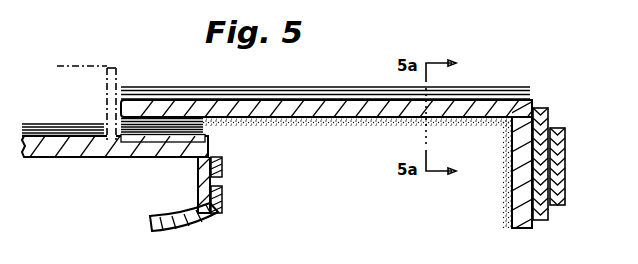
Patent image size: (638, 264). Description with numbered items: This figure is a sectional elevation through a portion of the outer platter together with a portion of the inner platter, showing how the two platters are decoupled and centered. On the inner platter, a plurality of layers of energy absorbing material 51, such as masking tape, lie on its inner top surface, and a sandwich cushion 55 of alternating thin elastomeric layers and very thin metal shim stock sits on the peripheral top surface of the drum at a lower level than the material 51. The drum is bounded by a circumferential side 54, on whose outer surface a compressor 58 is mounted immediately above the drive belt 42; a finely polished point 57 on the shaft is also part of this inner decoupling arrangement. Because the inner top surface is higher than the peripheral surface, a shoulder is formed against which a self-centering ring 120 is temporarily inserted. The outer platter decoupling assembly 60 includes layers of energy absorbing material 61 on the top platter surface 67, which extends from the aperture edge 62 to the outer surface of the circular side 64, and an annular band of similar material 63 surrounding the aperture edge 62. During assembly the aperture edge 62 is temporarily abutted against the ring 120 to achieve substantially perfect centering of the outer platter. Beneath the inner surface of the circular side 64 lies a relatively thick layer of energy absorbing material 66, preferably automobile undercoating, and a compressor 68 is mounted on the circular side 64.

The belt 42 is at (223, 203).
The energy absorbing material 51 is at (33, 123).
The circumferential side 54 is at (199, 179).
The sandwich cushion 55 is at (201, 131).
The finely polished point 57 is at (196, 226).
The compressor 58 is at (223, 172).
The outer platter decoupling assembly 60 is at (486, 84).
The energy absorbing material 61 is at (297, 89).
The aperture edge 62 is at (121, 107).
The energy absorbing material 63 is at (202, 127).
The circular side 64 is at (521, 229).
The energy absorbing material 66 is at (338, 124).
The top platter surface 67 is at (536, 106).
The compressor 68 is at (565, 143).
The self-centering ring 120 is at (113, 73).